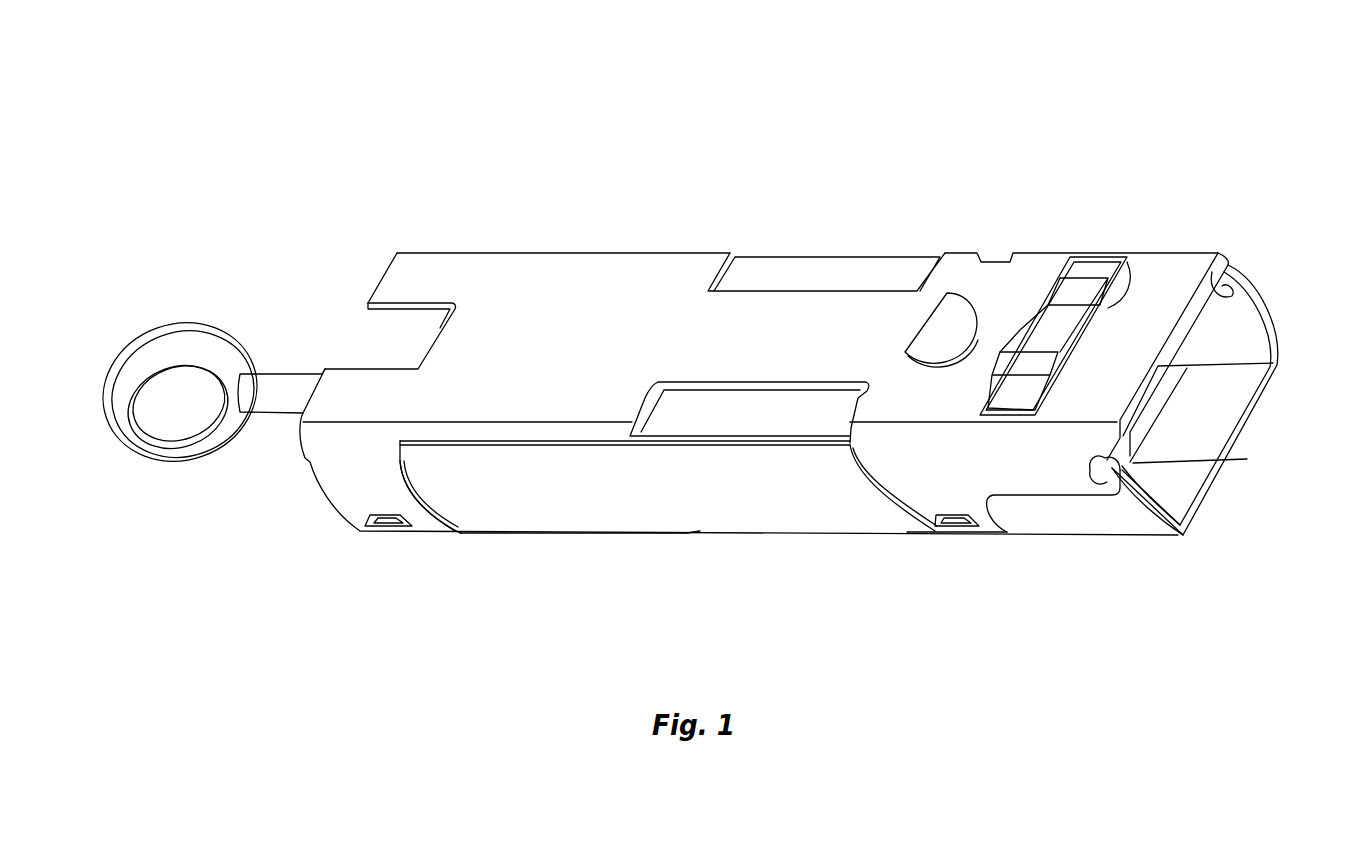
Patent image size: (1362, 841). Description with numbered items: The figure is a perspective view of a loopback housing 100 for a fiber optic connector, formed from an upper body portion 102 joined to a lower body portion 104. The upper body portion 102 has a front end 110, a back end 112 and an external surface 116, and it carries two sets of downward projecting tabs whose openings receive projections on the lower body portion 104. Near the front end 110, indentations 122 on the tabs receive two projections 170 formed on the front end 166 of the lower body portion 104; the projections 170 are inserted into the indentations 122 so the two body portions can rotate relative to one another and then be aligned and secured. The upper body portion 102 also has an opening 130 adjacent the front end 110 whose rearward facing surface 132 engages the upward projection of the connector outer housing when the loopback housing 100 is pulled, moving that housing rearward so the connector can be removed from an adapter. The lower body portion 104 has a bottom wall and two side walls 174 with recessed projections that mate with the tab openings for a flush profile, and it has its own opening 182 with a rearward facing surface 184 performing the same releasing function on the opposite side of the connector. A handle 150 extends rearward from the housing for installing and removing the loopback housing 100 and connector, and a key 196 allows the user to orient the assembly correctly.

The loopback housing 100 is at (1256, 148).
The upper body portion 102 is at (607, 252).
The lower body portion 104 is at (807, 522).
The front end 110 is at (1224, 260).
The back end 112 is at (387, 266).
The external surface 116 is at (813, 257).
The indentations 122 is at (1092, 480).
The opening 130 is at (1100, 255).
The rearward facing surface 132 is at (1122, 262).
The handle 150 is at (296, 372).
The front end 166 is at (1205, 500).
The projections 170 is at (1110, 470).
The side walls 174 is at (622, 522).
The opening 182 is at (1168, 392).
The rearward facing surface 184 is at (1157, 432).
The key 196 is at (955, 285).